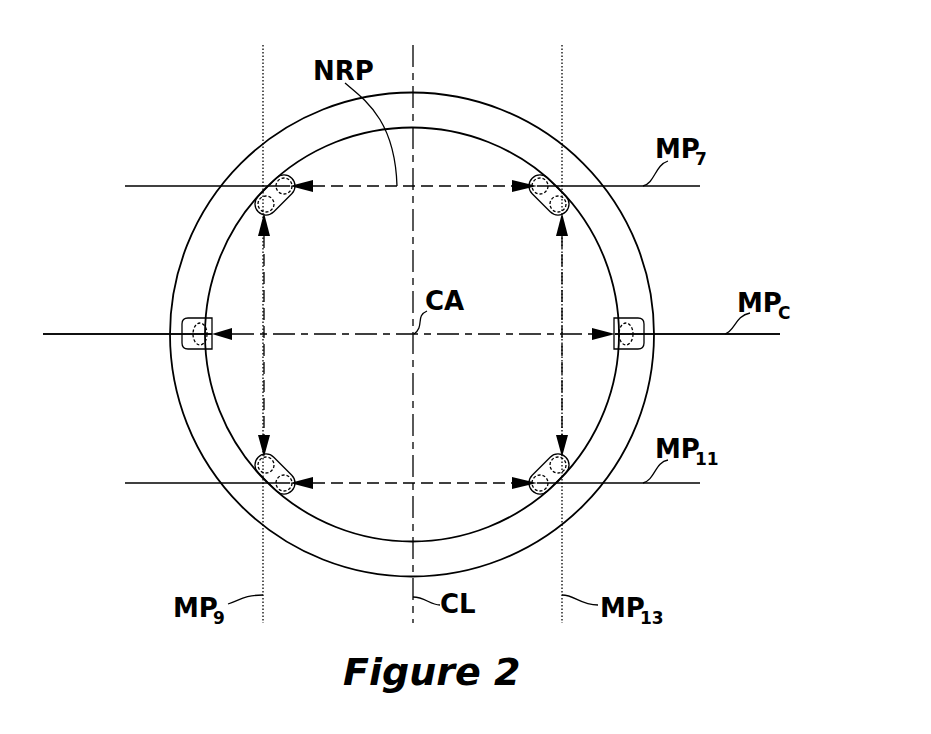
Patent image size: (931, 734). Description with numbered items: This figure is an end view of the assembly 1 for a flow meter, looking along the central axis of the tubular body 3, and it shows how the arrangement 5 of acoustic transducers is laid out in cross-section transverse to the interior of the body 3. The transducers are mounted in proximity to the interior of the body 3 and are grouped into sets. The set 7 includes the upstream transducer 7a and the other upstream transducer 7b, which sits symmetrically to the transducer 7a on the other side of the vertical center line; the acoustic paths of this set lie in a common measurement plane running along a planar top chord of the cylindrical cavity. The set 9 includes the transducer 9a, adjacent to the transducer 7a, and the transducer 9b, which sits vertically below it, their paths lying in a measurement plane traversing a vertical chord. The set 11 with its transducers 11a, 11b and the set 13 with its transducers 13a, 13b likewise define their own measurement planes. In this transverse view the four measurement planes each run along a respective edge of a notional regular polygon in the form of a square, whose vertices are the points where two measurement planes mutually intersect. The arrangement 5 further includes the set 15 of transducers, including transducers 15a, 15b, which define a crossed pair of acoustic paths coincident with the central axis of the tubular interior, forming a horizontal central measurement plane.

The assembly 1 is at (144, 81).
The tubular body 3 is at (639, 229).
The arrangement of acoustic transducers 5 is at (458, 166).
The set of acoustic transducers 7 is at (158, 178).
The upstream transducer 7a is at (283, 175).
The upstream transducer 7b is at (545, 175).
The set of acoustic transducers 9 is at (257, 78).
The acoustic transducer 9a is at (256, 206).
The acoustic transducer 9b is at (256, 462).
The set of acoustic transducers 11 is at (156, 475).
The acoustic transducer 11a is at (282, 497).
The acoustic transducer 11b is at (540, 497).
The set of acoustic transducers 13 is at (554, 76).
The acoustic transducer 13a is at (566, 214).
The acoustic transducer 13b is at (566, 456).
The set of acoustic transducers 15 is at (153, 327).
The acoustic transducer 15a is at (203, 318).
The acoustic transducer 15b is at (622, 318).